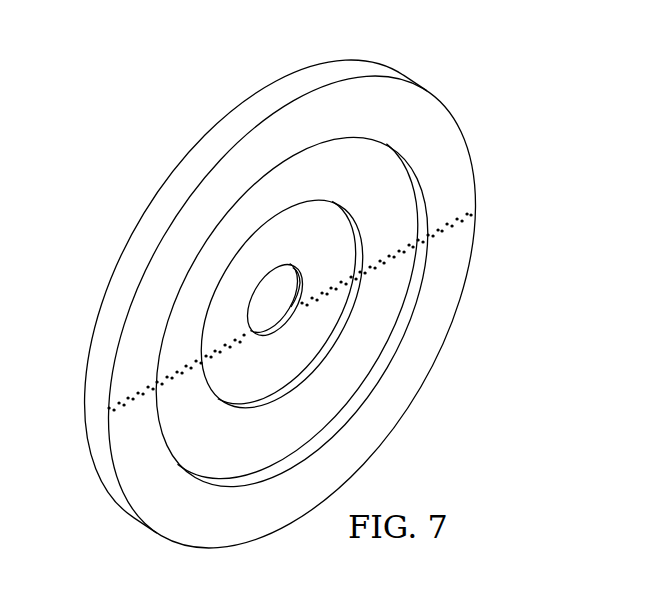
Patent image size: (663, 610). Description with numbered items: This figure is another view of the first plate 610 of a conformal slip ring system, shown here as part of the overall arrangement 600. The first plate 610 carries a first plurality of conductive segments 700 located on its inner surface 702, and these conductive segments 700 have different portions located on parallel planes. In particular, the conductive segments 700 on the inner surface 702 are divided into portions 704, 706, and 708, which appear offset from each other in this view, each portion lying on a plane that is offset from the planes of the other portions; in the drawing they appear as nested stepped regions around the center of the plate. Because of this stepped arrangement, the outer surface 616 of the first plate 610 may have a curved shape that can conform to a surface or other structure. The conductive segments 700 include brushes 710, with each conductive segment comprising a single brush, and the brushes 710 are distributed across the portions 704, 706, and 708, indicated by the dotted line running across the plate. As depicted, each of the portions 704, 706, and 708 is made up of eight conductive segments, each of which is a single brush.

The disc assembly 600 is at (133, 109).
The outer surface 616 is at (268, 76).
The first plate 610 is at (96, 476).
The inner surface 702 is at (452, 138).
The portion 708 is at (240, 531).
The first plurality of conductive segments 700 is at (357, 369).
The portion 706 is at (256, 457).
The portion 704 is at (281, 380).
The brushes 710 is at (484, 210).